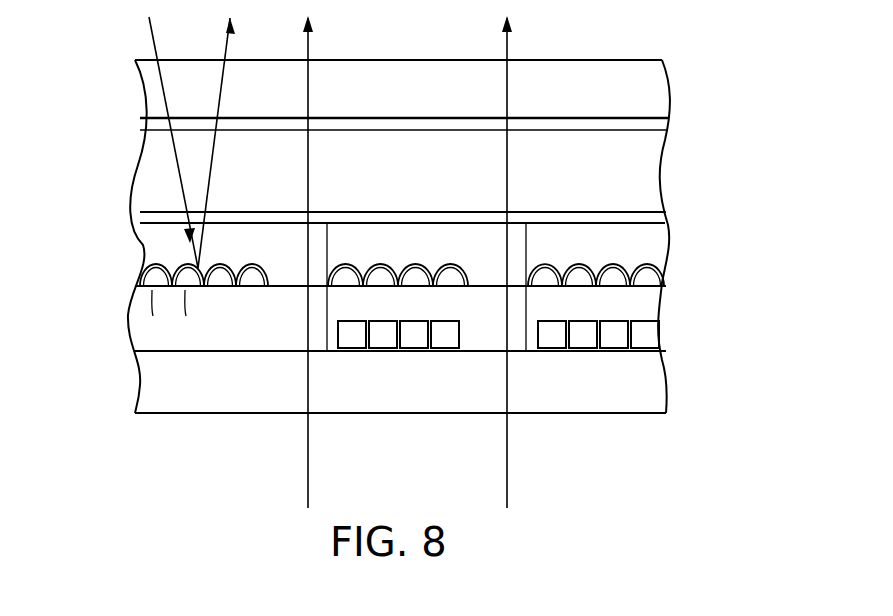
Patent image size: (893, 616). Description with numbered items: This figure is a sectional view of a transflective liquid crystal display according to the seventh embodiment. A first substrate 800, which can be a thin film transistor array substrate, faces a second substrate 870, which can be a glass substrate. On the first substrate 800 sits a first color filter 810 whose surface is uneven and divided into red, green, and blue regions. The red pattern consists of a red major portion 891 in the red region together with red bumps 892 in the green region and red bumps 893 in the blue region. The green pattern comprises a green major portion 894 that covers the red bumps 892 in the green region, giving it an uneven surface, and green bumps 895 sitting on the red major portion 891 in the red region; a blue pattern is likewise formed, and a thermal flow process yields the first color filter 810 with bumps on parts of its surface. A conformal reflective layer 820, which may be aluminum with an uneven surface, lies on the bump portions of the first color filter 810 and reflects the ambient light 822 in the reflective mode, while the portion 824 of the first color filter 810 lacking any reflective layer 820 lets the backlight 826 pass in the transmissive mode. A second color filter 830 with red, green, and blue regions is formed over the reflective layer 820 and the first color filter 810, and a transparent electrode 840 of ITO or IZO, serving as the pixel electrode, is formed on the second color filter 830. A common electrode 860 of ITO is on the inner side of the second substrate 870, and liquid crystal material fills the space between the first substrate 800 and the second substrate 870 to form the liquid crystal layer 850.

The first substrate 800 is at (643, 381).
The first color filter 810 is at (643, 308).
The reflective layer 820 is at (143, 265).
The ambient light 822 is at (153, 42).
The portion 824 is at (286, 290).
The backlight 826 is at (308, 488).
The second color filter 830 is at (655, 241).
The transparent electrode 840 is at (643, 214).
The liquid crystal layer 850 is at (643, 165).
The common electrode 860 is at (643, 122).
The second substrate 870 is at (643, 93).
The red major portion 891 is at (150, 345).
The red bumps 892 is at (352, 351).
The red bumps 893 is at (548, 351).
The green major portion 894 is at (489, 333).
The green bumps 895 is at (137, 288).